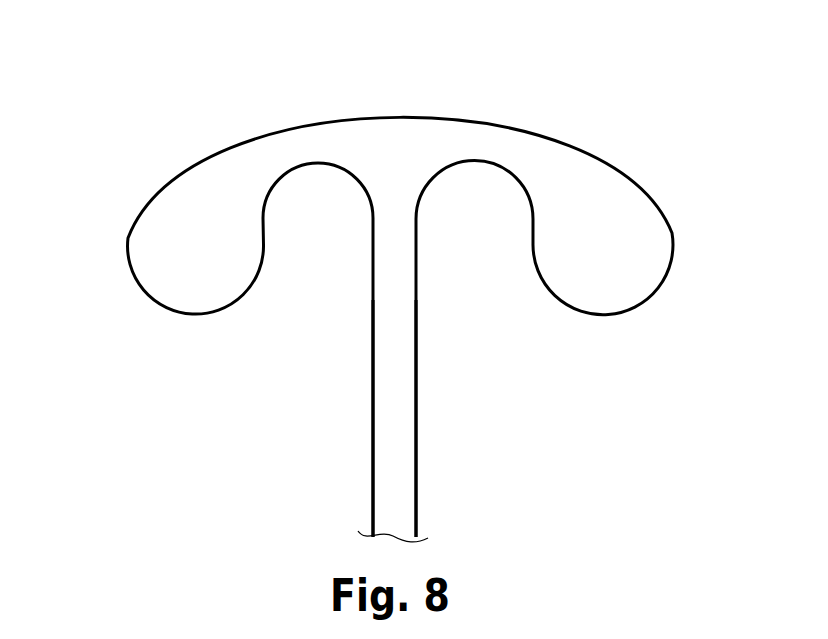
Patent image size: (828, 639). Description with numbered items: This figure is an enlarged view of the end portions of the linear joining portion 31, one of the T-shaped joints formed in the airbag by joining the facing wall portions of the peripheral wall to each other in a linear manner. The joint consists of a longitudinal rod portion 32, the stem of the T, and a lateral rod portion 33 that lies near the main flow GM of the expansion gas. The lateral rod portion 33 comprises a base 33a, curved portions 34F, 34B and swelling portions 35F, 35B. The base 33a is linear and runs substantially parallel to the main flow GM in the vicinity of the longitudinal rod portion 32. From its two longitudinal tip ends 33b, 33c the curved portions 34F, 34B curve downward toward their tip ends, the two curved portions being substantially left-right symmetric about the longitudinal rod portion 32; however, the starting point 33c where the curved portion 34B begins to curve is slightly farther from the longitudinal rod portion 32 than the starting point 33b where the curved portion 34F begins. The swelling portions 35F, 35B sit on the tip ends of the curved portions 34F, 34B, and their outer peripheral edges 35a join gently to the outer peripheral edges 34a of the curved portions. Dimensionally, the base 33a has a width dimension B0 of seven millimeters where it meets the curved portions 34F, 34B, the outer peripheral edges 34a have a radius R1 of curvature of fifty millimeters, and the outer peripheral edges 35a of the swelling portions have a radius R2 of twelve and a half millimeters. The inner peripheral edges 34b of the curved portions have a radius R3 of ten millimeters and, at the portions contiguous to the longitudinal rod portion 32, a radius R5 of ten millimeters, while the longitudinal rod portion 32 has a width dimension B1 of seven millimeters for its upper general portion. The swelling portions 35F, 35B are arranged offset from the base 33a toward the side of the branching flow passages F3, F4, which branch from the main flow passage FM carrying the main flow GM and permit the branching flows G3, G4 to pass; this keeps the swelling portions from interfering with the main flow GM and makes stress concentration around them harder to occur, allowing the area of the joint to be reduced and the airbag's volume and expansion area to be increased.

The linear joining portion 31 is at (287, 440).
The longitudinal rod portion 32 is at (417, 392).
The lateral rod portion 33 is at (376, 108).
The base 33a is at (412, 147).
The longitudinal tip end (starting point) 33b is at (307, 142).
The longitudinal tip end (starting point) 33c is at (472, 138).
The outer peripheral edge 34a is at (207, 153).
The inner peripheral edge 34b is at (278, 183).
The curved portion 34F is at (257, 158).
The curved portion 34B is at (520, 158).
The outer peripheral edge 35a is at (127, 236).
The swelling portion 35F is at (157, 277).
The swelling portion 35B is at (558, 277).
The width dimension B0 is at (309, 193).
The width dimension B1 is at (322, 497).
The radius of curvature R1 is at (237, 180).
The radius of curvature R2 is at (196, 247).
The radius of curvature R3 is at (279, 181).
The radius of curvature R5 is at (350, 178).
The main flow passage FM is at (344, 87).
The main flow GM is at (727, 100).
The branching flow G3 is at (67, 158).
The branching flow G4 is at (747, 160).
The branching flow passage F3 is at (98, 262).
The branching flow passage F4 is at (695, 293).